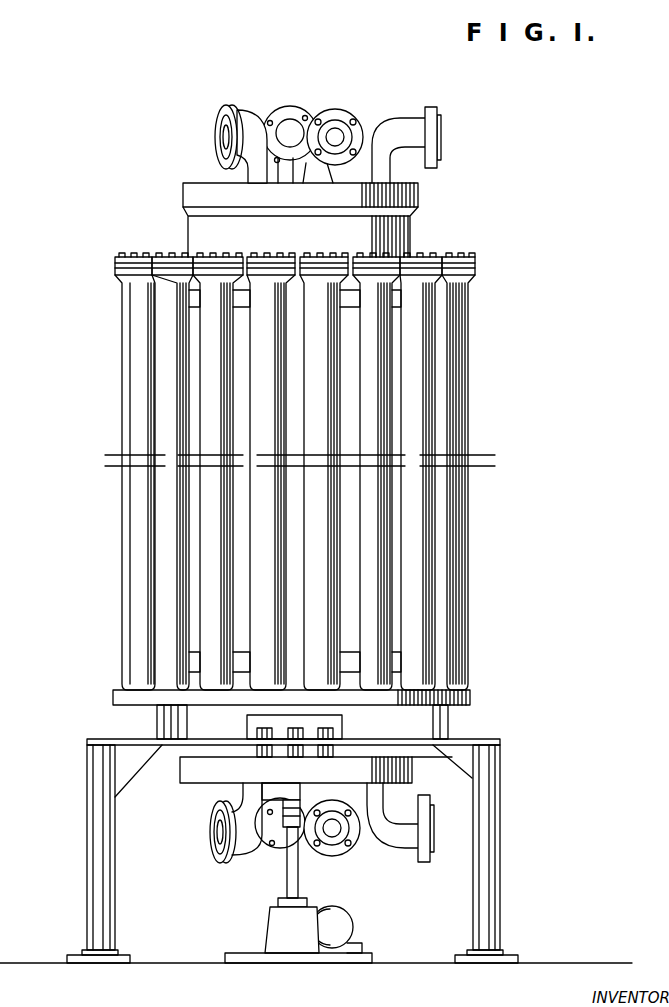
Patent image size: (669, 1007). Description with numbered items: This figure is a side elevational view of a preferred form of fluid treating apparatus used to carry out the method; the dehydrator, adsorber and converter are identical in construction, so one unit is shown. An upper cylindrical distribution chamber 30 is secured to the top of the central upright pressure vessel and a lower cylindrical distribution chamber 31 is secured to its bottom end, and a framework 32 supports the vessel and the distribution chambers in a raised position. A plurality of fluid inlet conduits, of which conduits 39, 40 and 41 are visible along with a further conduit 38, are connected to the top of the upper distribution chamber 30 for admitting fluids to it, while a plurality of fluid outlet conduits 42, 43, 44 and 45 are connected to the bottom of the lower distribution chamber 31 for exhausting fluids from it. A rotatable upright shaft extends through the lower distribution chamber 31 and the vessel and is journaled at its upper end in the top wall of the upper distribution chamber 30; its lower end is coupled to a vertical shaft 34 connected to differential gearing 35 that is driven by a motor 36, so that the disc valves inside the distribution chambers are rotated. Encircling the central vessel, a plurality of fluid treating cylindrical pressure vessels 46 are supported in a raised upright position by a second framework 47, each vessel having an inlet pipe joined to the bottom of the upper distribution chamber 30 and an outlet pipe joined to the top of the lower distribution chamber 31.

The upper cylindrical distribution chamber 30 is at (427, 231).
The lower cylindrical distribution chamber 31 is at (180, 726).
The framework 32 is at (509, 847).
The vertical shaft 34 is at (298, 877).
The differential gearing 35 is at (280, 928).
The motor 36 is at (350, 923).
The outlet elbow 38 is at (432, 116).
The fluid inlet conduit 39 is at (341, 102).
The fluid inlet conduit 40 is at (246, 146).
The fluid inlet conduit 41 is at (293, 111).
The fluid outlet conduit 42 is at (418, 860).
The fluid outlet conduit 43 is at (343, 852).
The fluid outlet conduit 44 is at (222, 862).
The fluid outlet conduit 45 is at (270, 857).
The fluid treating cylindrical pressure vessels 46 is at (168, 355).
The framework 47 is at (448, 722).